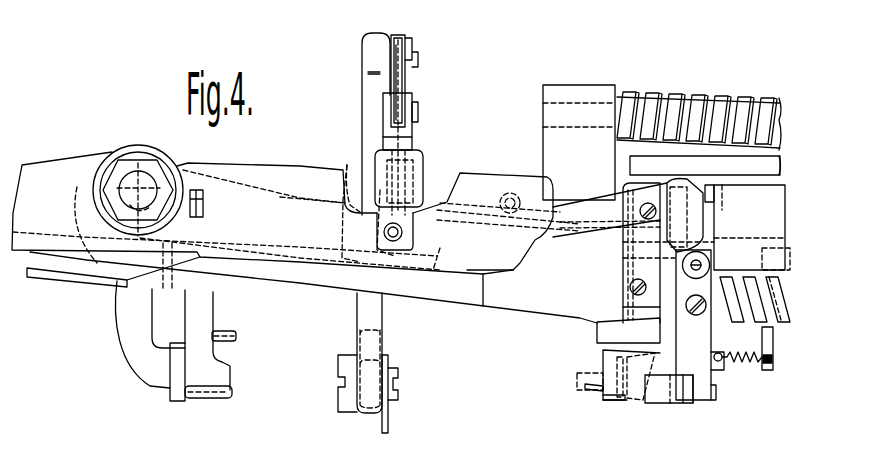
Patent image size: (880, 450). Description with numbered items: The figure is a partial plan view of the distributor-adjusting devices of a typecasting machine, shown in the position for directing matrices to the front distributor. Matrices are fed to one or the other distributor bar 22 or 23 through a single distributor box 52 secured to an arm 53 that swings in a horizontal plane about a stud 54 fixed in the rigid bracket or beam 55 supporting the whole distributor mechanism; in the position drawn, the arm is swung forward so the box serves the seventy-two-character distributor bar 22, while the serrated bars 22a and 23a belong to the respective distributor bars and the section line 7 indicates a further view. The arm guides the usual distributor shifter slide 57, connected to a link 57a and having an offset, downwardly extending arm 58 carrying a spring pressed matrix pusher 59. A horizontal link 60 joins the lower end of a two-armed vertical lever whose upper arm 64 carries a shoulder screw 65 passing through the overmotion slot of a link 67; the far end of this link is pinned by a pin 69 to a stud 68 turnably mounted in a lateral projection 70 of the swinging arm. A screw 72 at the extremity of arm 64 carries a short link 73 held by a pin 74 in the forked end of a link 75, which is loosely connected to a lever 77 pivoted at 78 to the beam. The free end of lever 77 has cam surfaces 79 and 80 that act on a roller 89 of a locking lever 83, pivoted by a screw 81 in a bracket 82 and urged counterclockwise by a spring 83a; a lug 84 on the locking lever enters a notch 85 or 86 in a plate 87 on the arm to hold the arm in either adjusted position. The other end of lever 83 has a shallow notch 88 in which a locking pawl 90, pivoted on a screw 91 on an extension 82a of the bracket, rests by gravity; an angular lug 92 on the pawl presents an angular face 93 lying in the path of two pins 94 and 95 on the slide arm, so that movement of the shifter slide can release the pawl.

The section line 7- 7 is at (427, 67).
The distributor bar 22 is at (624, 280).
The frame plate serrations 22a is at (735, 318).
The distributor bar 23 is at (633, 160).
The serrated rack strip 23a is at (697, 96).
The distributor box 52 is at (533, 237).
The arm 53 is at (306, 290).
The stud 54 is at (130, 183).
The bracket or beam 55 is at (263, 175).
The distributor shifter slide 57 is at (208, 283).
The link 57a is at (64, 280).
The arm 58 is at (210, 308).
The matrix pusher 59 is at (213, 175).
The link 60 is at (382, 434).
The upper arm 64 is at (366, 90).
The shoulder screw 65 is at (413, 45).
The link 67 is at (412, 95).
The stud 68 is at (403, 197).
The pin 69 is at (367, 167).
The lateral projection 70 is at (414, 174).
The screw 72 is at (404, 27).
The short link 73 is at (400, 83).
The pin 74 is at (418, 115).
The link 75 is at (415, 157).
The lever 77 is at (580, 207).
The pivot 78 is at (505, 192).
The cam surface 79 is at (713, 240).
The cam surface 80 is at (700, 183).
The screw 81 is at (693, 325).
The bracket 82 is at (714, 370).
The extension 82a is at (603, 360).
The locking lever 83 is at (713, 400).
The spring 83a is at (755, 366).
The lug 84 is at (720, 199).
The notch 85 is at (670, 185).
The notch 86 is at (655, 324).
The plate 87 is at (612, 316).
The shallow notch 88 is at (688, 403).
The roller 89 is at (711, 262).
The locking pawl 90 is at (658, 403).
The screw 91 is at (612, 400).
The angular lug 92 is at (641, 388).
The angular face 93 is at (583, 382).
The pin 94 is at (232, 392).
The pin 95 is at (231, 340).